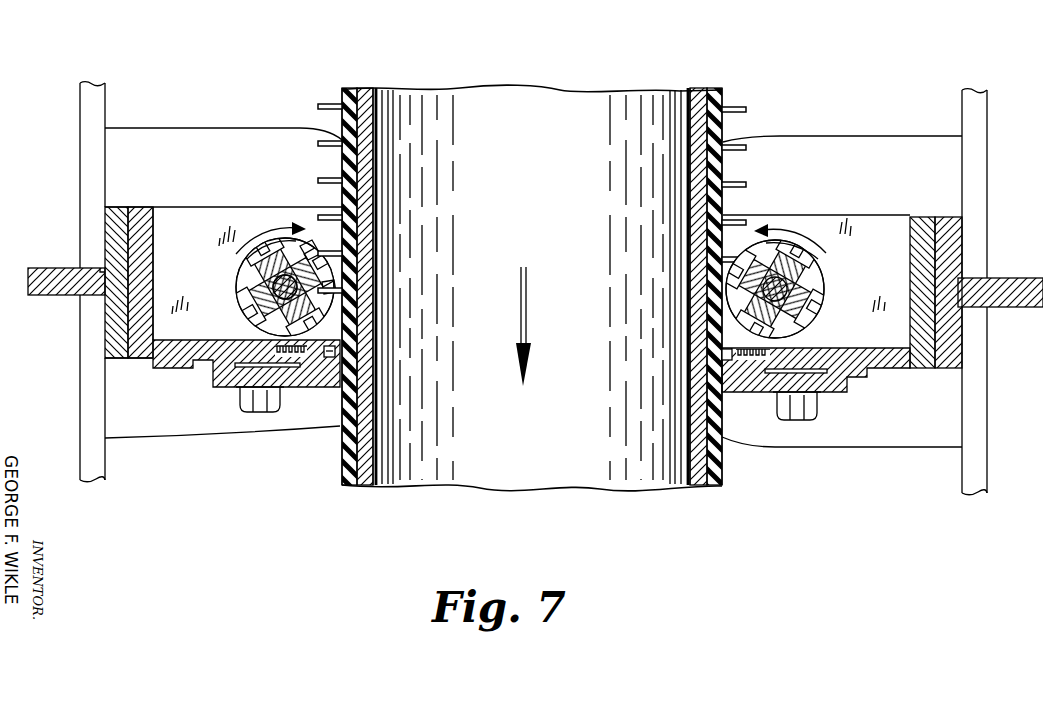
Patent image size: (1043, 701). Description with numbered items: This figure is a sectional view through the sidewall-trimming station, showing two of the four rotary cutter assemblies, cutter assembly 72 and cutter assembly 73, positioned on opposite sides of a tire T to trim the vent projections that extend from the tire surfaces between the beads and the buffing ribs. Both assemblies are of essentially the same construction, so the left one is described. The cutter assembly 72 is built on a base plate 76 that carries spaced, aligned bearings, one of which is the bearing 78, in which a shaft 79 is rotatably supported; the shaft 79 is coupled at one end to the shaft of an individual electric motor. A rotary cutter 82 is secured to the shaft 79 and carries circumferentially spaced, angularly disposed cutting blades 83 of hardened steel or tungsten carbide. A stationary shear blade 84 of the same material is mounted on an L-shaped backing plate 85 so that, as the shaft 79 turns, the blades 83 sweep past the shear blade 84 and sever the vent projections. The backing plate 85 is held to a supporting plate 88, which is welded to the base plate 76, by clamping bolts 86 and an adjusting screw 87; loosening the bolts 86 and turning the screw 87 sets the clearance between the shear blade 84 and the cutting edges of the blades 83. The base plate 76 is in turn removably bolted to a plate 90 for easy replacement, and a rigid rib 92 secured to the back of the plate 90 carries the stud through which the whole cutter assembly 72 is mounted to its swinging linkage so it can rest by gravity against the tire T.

The cutter assembly 72 is at (190, 158).
The cutter assembly 73 is at (828, 183).
The tire T is at (352, 88).
The base plate 76 is at (138, 350).
The bearing 78 is at (169, 220).
The shaft 79 is at (268, 280).
The rotary cutter 82 is at (272, 256).
The cutting blades 83 is at (311, 238).
The stationary shear blade 84 is at (340, 296).
The L-shaped backing plate 85 is at (336, 328).
The clamping bolts 86 is at (262, 413).
The adjusting screw 87 is at (337, 355).
The supporting plate 88 is at (215, 343).
The plate 90 is at (115, 228).
The rigid rib 92 is at (50, 272).